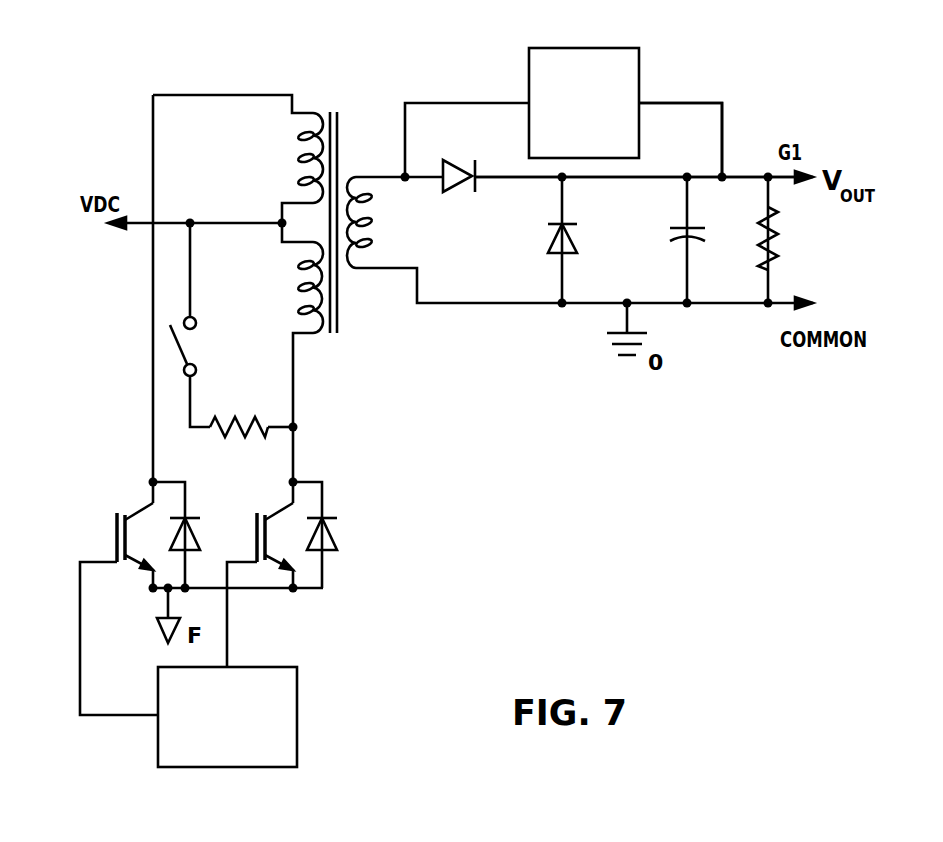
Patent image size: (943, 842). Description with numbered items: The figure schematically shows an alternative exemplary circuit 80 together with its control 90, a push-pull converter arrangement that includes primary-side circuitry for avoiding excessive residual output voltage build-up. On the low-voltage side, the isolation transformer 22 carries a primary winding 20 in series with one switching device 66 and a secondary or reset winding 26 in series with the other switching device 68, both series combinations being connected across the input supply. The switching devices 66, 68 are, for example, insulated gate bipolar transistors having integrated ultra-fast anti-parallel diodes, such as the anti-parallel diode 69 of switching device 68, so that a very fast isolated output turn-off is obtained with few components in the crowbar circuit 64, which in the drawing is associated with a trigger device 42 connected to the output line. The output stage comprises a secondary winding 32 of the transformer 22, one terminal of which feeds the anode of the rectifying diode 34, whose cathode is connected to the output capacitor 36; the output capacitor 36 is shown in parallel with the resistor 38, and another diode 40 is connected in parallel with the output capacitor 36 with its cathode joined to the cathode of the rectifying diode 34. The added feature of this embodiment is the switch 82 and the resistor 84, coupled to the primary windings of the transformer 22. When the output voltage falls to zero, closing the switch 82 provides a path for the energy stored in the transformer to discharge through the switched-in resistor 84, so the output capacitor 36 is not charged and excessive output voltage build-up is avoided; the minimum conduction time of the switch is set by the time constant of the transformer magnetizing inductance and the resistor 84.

The primary winding 20 is at (300, 265).
The isolation transformer 22 is at (340, 118).
The secondary (or reset) winding 26 is at (313, 112).
The secondary winding 32 is at (352, 270).
The rectifying diode 34 is at (464, 184).
The output capacitor 36 is at (680, 240).
The resistor 38 is at (772, 215).
The diode 40 is at (546, 246).
The trigger device 42 is at (604, 144).
The crowbar circuit 64 is at (716, 136).
The switching device 66 is at (338, 617).
The switching device 68 is at (118, 477).
The anti-parallel diode 69 is at (198, 540).
The circuit 80 is at (724, 48).
The switch 82 is at (186, 356).
The resistor 84 is at (250, 433).
The control 90 is at (247, 743).